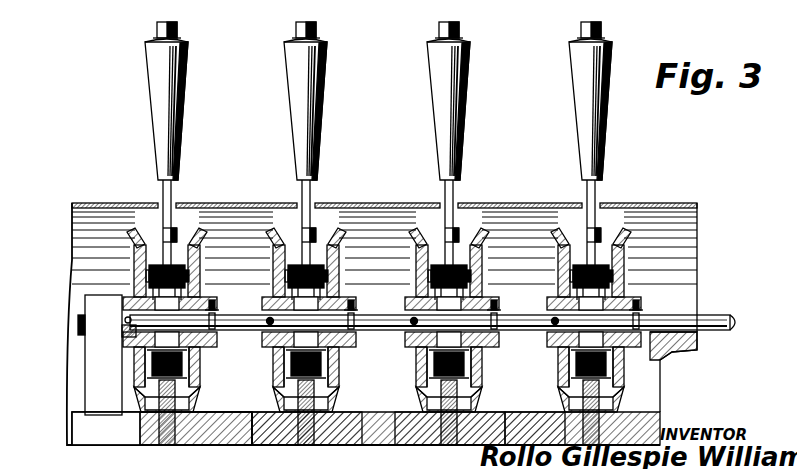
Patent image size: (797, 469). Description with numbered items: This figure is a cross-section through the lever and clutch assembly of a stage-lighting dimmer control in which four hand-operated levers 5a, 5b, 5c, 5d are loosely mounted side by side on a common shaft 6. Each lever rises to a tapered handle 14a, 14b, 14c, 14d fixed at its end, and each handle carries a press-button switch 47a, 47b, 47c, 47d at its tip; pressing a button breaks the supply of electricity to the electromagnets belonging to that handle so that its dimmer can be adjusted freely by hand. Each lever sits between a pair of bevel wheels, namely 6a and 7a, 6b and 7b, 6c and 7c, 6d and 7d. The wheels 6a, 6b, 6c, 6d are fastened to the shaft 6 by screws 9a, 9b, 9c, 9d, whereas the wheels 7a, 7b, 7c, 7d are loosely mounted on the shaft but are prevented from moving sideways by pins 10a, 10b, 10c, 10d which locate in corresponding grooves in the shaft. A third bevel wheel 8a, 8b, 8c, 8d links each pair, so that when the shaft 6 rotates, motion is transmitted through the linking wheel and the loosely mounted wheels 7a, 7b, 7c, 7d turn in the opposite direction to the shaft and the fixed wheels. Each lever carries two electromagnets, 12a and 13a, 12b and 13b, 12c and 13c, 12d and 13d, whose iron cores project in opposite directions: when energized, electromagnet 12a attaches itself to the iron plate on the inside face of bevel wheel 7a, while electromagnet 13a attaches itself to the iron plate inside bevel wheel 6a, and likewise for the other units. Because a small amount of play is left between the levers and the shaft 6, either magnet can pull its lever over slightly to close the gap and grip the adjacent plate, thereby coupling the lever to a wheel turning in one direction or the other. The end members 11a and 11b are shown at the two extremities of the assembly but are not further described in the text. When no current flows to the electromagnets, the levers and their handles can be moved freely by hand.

The hand-operated lever 5a is at (163, 188).
The hand-operated lever 5b is at (302, 188).
The hand-operated lever 5c is at (445, 188).
The hand-operated lever 5d is at (587, 188).
The shaft 6 is at (702, 320).
The bevel wheel 6a is at (135, 245).
The bevel wheel 6b is at (273, 245).
The bevel wheel 6c is at (416, 245).
The bevel wheel 6d is at (557, 245).
The bevel wheel 7a is at (193, 241).
The bevel wheel 7b is at (334, 243).
The bevel wheel 7c is at (470, 392).
The bevel wheel 7d is at (624, 252).
The third bevel wheel 8a is at (166, 404).
The third bevel wheel 8b is at (278, 400).
The third bevel wheel 8c is at (438, 400).
The third bevel wheel 8d is at (566, 400).
The screw 9a is at (126, 324).
The screw 9b is at (268, 325).
The screw 9c is at (412, 325).
The screw 9d is at (553, 325).
The pin 10a is at (211, 306).
The pin 10b is at (351, 305).
The pin 10c is at (494, 305).
The pin 10d is at (638, 305).
The bearing block 11a is at (100, 355).
The bearing block 11b is at (680, 345).
The electromagnet 12a is at (177, 232).
The electromagnet 12b is at (316, 232).
The electromagnet 12c is at (459, 232).
The electromagnet 12d is at (601, 232).
The electromagnet 13a is at (184, 360).
The electromagnet 13b is at (322, 364).
The electromagnet 13c is at (465, 364).
The electromagnet 13d is at (607, 366).
The handle 14a is at (152, 91).
The handle 14b is at (291, 87).
The handle 14c is at (433, 87).
The handle 14d is at (575, 83).
The press-button switch 47a is at (177, 30).
The press-button switch 47b is at (316, 28).
The press-button switch 47c is at (459, 28).
The press-button switch 47d is at (601, 30).